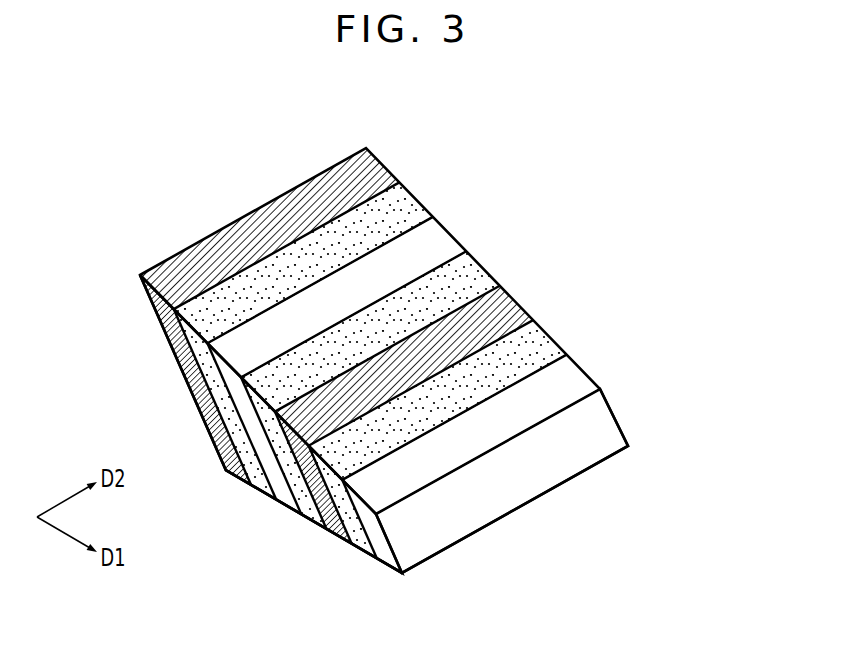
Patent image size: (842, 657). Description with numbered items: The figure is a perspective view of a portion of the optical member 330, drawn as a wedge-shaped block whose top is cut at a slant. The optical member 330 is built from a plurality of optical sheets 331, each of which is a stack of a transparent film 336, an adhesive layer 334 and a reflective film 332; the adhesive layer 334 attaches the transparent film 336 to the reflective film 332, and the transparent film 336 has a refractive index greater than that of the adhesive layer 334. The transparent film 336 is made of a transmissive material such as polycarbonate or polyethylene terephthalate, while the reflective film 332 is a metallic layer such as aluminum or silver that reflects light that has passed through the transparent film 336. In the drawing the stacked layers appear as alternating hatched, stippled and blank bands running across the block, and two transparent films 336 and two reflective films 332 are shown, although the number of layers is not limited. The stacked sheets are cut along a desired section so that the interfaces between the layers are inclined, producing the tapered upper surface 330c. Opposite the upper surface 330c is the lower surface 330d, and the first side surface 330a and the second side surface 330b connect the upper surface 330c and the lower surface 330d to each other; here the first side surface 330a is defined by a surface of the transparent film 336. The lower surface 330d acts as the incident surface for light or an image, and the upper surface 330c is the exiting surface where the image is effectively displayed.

The optical member 330 is at (500, 176).
The first side surface 330a is at (507, 485).
The second side surface 330b is at (163, 319).
The upper surface 330c is at (573, 380).
The lower surface 330d is at (308, 520).
The optical sheets 331 is at (288, 112).
The reflective film 332 is at (207, 249).
The adhesive layer 334 is at (283, 260).
The transparent film 336 is at (368, 268).